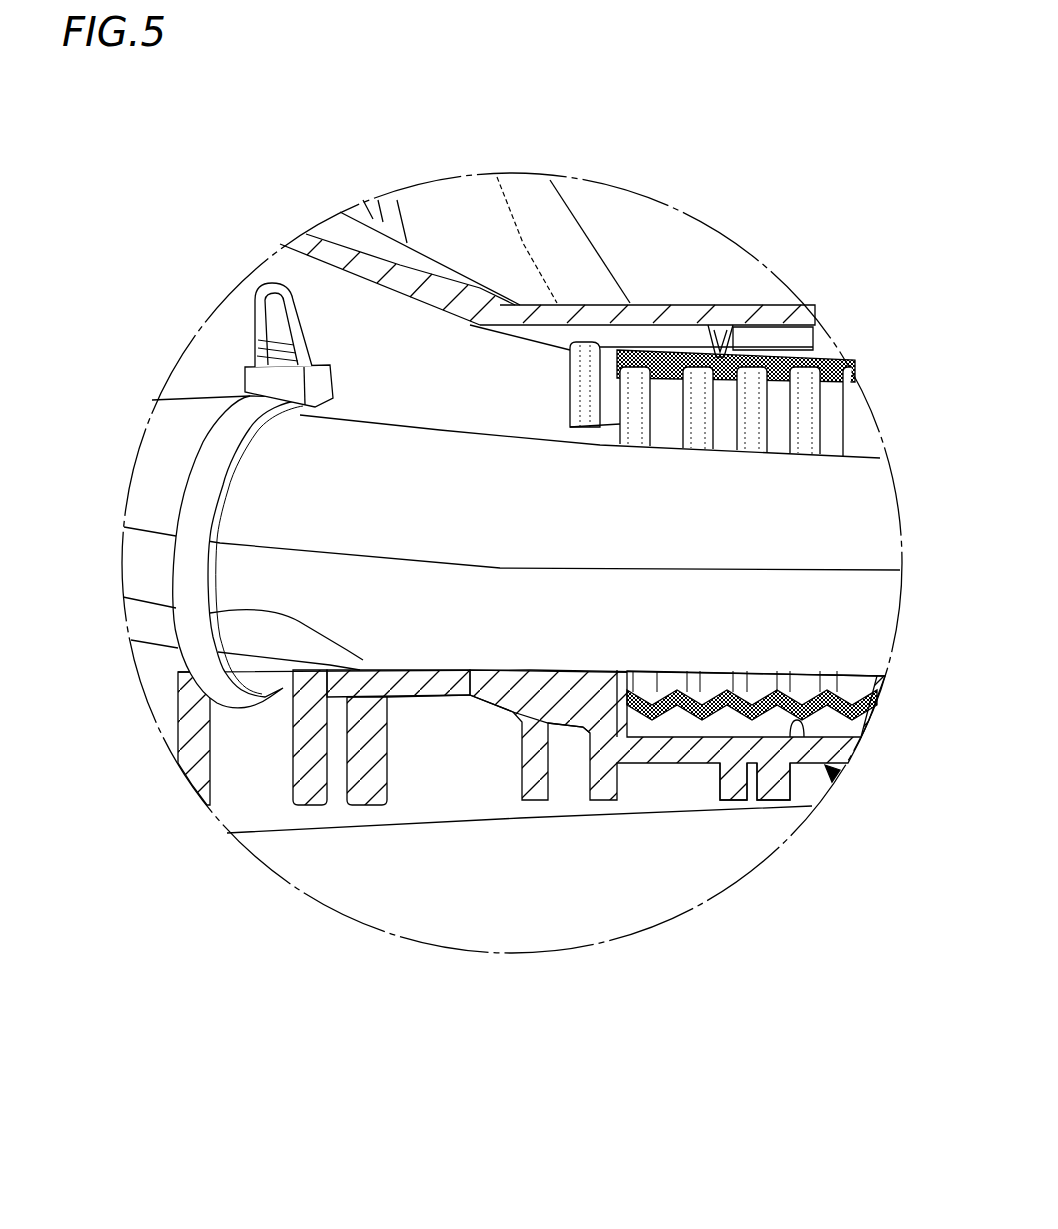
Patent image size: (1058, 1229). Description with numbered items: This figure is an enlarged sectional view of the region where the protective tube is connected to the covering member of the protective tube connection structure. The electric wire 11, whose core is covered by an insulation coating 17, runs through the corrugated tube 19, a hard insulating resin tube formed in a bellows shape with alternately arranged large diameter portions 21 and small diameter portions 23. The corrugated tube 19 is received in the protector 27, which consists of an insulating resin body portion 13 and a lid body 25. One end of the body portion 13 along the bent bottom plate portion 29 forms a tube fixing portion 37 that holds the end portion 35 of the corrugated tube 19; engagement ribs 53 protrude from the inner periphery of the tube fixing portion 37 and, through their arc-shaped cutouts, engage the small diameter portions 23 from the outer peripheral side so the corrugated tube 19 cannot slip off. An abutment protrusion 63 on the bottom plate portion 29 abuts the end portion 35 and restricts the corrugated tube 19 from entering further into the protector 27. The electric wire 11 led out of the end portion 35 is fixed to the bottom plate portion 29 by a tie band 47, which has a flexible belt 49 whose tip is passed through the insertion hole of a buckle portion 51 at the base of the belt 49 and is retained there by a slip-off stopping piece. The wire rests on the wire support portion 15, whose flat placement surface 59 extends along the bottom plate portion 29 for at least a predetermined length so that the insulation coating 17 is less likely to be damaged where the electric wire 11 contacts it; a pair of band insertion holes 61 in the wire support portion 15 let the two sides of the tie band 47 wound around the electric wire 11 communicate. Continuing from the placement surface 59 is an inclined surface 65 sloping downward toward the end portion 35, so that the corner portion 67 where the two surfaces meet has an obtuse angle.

The electric wire 11 is at (380, 601).
The body portion 13 is at (302, 836).
The wire support portion 15 is at (363, 656).
The insulation coating 17 is at (720, 513).
The corrugated tube 19 is at (858, 360).
The large diameter portion 21 is at (657, 713).
The small diameter portion 23 is at (633, 670).
The lid body 25 is at (735, 298).
The protector 27 is at (675, 255).
The bottom plate portion 29 is at (820, 717).
The end portion 35 is at (627, 423).
The tube fixing portion 37 is at (842, 779).
The tie band 47 is at (297, 280).
The belt 49 is at (180, 498).
The buckle portion 51 is at (240, 370).
The engagement rib 53 is at (730, 678).
The placement surface 59 is at (176, 606).
The band insertion hole 61 is at (277, 690).
The abutment protrusion 63 is at (603, 670).
The inclined surface 65 is at (538, 683).
The corner portion 67 is at (457, 667).